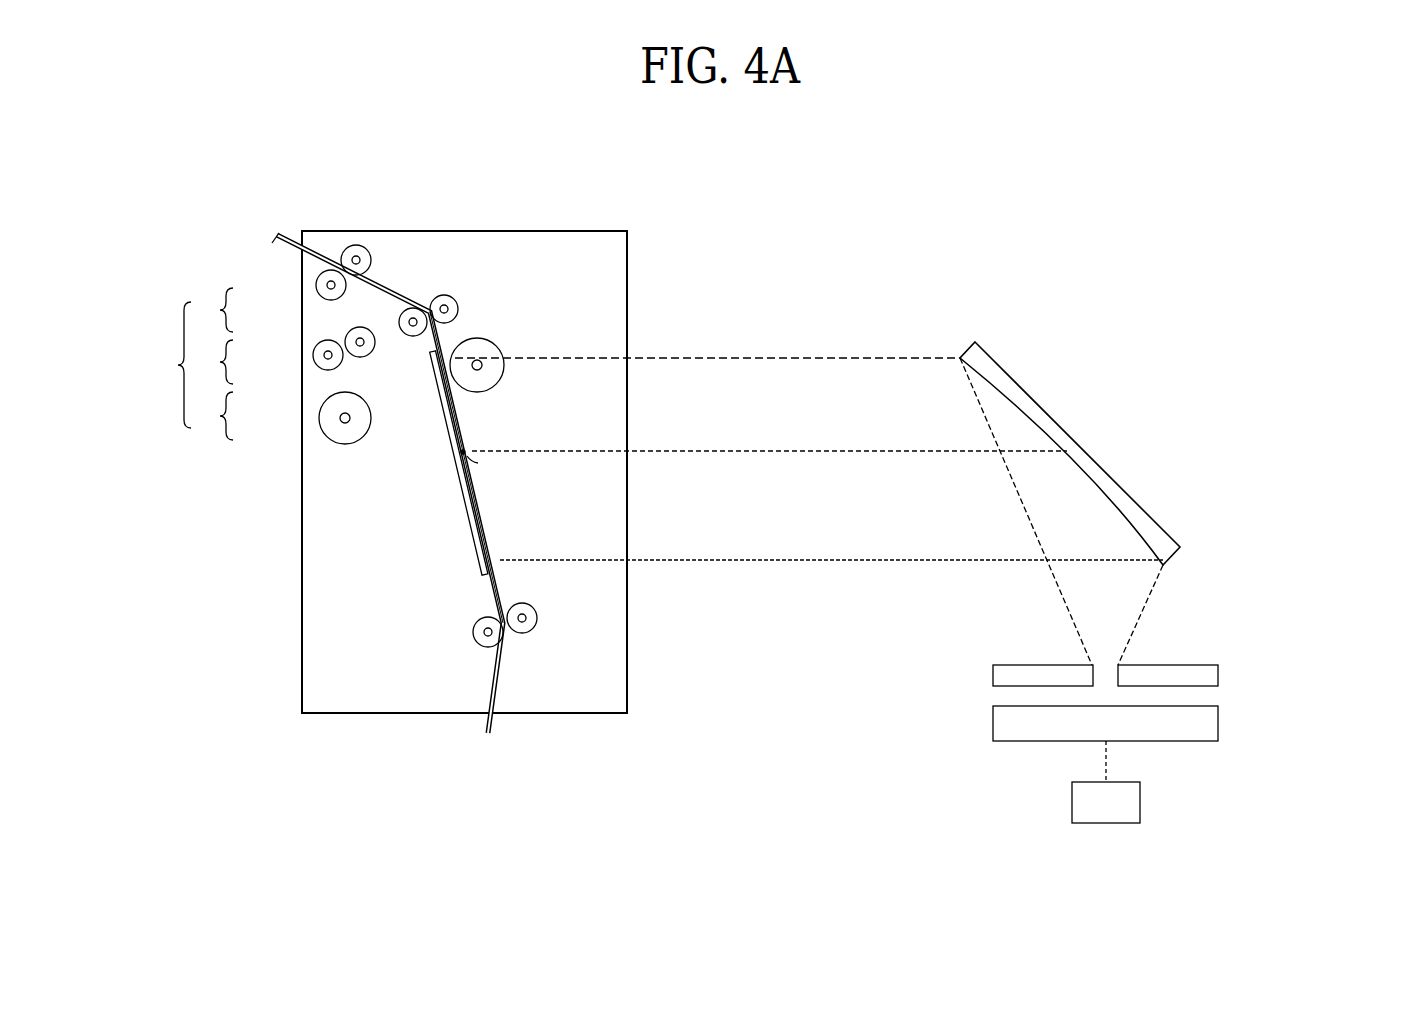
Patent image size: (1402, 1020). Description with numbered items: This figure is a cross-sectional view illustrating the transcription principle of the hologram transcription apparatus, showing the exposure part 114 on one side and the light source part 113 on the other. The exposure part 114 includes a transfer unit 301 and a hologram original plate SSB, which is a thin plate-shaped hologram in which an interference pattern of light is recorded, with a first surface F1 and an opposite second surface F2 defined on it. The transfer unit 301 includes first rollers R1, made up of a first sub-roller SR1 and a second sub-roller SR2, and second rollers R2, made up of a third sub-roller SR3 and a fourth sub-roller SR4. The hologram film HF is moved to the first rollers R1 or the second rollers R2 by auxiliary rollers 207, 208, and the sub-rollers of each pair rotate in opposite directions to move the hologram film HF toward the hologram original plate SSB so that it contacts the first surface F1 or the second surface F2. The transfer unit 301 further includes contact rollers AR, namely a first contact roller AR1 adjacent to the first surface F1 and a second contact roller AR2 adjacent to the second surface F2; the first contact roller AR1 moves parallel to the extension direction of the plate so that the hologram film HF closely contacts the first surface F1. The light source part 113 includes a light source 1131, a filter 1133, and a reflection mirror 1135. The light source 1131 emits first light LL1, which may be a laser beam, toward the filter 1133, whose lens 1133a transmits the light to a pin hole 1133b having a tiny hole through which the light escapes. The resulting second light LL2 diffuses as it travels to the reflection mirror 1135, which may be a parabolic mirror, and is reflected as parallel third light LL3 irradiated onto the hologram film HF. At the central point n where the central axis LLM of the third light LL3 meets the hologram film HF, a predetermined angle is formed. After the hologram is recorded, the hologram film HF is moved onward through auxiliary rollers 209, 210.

The exposure part 114 is at (533, 231).
The auxiliary roller 207 is at (357, 250).
The auxiliary roller 208 is at (319, 286).
The auxiliary roller 209 is at (473, 632).
The auxiliary roller 210 is at (537, 618).
The transfer unit 301 is at (161, 365).
The first rollers R1 is at (210, 310).
The second rollers R2 is at (210, 362).
The contact rollers AR is at (210, 416).
The first sub-roller SR1 is at (399, 322).
The second sub-roller SR2 is at (431, 311).
The third sub-roller SR3 is at (317, 357).
The fourth sub-roller SR4 is at (352, 333).
The first contact roller AR1 is at (450, 360).
The second contact roller AR2 is at (322, 415).
The first surface F1 is at (452, 420).
The second surface F2 is at (458, 453).
The hologram original plate SSB is at (460, 489).
The hologram film HF is at (488, 585).
The central point n is at (470, 442).
The third light LL3 is at (753, 357).
The central axis LLM is at (757, 451).
The reflection mirror 1135 is at (1010, 385).
The light source part 113 is at (1279, 620).
The second light LL2 is at (1142, 615).
The filter 1133 is at (1197, 702).
The lens 1133a is at (1210, 723).
The pin hole 1133b is at (1210, 675).
The first light LL1 is at (1107, 753).
The light source 1131 is at (1132, 802).